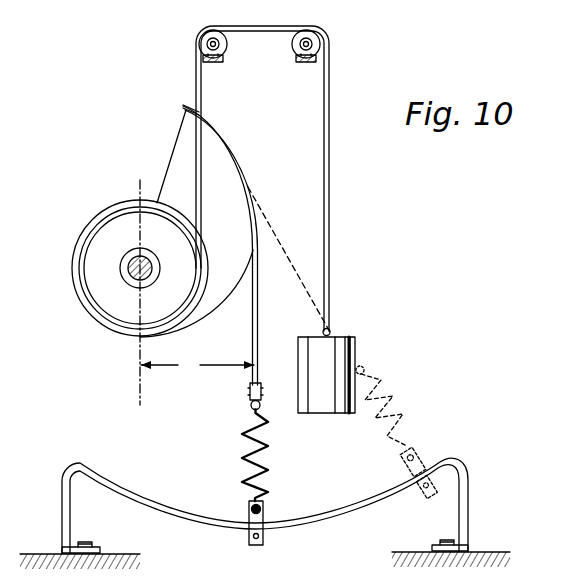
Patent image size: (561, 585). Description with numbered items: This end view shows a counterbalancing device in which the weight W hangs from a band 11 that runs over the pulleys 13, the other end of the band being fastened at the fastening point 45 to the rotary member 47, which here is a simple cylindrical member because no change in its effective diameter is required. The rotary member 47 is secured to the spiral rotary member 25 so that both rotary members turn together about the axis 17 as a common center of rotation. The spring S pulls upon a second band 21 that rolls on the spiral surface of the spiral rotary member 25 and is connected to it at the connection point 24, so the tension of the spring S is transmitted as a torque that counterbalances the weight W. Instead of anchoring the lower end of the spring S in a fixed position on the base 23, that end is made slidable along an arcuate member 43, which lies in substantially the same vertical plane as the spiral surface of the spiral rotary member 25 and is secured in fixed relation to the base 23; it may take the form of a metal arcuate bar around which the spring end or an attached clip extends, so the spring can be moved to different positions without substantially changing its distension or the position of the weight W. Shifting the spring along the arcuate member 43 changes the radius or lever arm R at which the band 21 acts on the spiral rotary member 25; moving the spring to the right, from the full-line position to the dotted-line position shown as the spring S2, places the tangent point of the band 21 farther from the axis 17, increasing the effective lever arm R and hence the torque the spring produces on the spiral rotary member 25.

The band 11 is at (330, 142).
The pulleys 13 is at (291, 46).
The connection point 24 is at (184, 106).
The fastening point 45 is at (111, 216).
The rotary member 47 is at (92, 262).
The axis 17 is at (160, 250).
The band 21 is at (258, 308).
The spiral rotary member 25 is at (206, 310).
The lever arm R is at (197, 367).
The weight W is at (326, 371).
The spring S is at (270, 452).
The spring in dotted-line position S2 is at (399, 432).
The arcuate member 43 is at (349, 516).
The base 23 is at (120, 553).